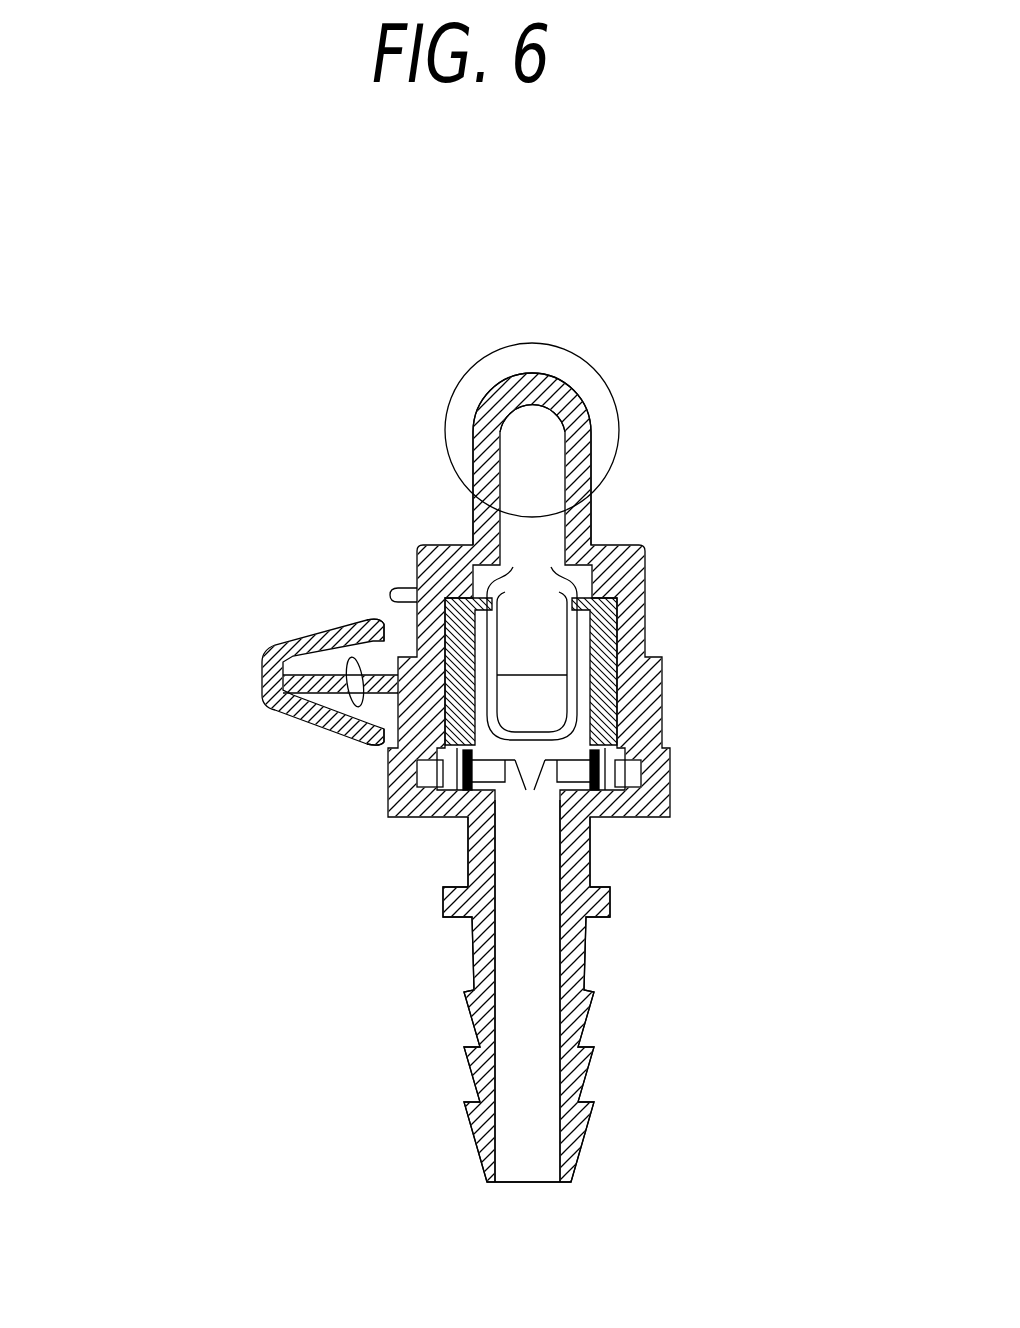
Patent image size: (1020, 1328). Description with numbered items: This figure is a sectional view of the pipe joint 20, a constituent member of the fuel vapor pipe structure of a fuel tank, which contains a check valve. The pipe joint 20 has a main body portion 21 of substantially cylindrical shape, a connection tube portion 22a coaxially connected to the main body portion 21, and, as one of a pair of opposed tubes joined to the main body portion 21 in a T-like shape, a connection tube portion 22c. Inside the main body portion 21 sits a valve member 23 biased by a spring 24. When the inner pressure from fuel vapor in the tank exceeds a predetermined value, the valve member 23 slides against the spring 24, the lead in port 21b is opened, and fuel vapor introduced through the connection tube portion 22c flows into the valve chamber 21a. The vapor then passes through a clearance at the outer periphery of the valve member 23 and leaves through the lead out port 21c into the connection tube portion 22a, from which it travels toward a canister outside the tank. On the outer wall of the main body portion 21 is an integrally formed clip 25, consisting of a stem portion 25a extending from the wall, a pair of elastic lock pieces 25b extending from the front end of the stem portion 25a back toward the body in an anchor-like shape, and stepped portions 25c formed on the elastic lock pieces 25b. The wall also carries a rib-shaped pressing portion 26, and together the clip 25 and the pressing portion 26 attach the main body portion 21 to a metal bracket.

The pipe joint 20 is at (615, 314).
The main body portion 21 is at (662, 718).
The valve chamber 21a is at (605, 580).
The lead in port 21b is at (550, 469).
The lead out port 21c is at (522, 812).
The connection tube portion 22a is at (578, 1092).
The connection tube portion 22c is at (600, 397).
The valve member 23 is at (618, 678).
The spring 24 is at (585, 748).
The clip 25 is at (118, 533).
The stem portion 25a is at (283, 684).
The elastic lock pieces 25b is at (297, 642).
The stepped portions 25c is at (384, 625).
The pressing portion 26 is at (390, 600).